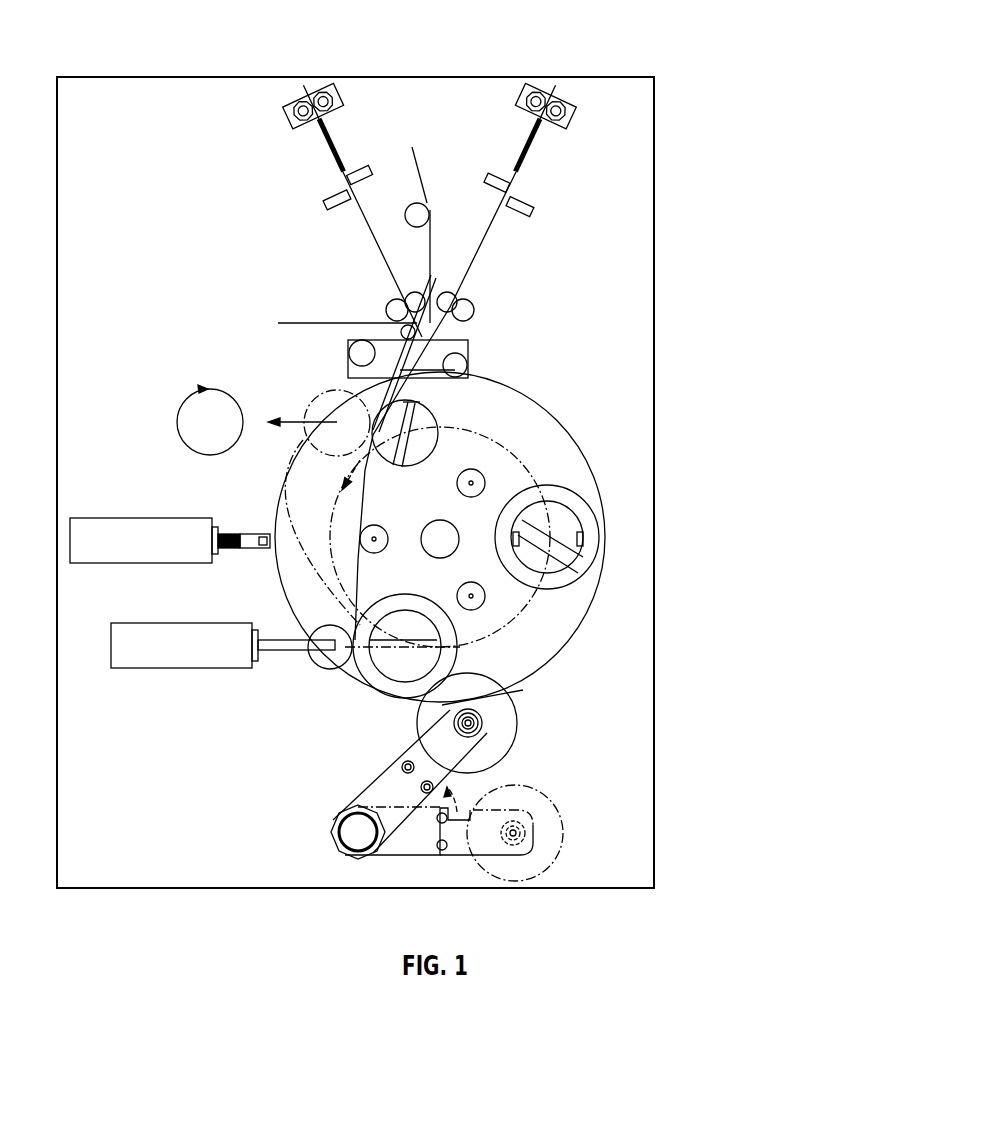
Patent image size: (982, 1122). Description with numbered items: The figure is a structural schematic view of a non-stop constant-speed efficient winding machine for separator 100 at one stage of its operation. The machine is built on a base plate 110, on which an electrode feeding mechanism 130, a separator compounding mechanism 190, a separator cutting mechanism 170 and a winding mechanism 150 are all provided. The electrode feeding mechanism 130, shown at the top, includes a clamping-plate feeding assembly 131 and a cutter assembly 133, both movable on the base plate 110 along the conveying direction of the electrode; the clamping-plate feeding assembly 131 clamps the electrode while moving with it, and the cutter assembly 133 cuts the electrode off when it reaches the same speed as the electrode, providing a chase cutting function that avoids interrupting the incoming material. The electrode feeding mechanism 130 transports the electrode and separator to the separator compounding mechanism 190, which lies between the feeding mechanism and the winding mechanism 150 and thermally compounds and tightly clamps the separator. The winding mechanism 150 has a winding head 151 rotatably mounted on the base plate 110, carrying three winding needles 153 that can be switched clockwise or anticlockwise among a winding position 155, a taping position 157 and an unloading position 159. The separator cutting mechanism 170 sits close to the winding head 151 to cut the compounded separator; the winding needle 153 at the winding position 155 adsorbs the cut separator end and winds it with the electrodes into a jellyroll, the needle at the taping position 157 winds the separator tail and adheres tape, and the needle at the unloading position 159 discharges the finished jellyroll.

The non-stop constant-speed efficient winding machine for separator 100 is at (410, 63).
The base plate 110 is at (654, 632).
The electrode feeding mechanism 130 is at (545, 134).
The clamping-plate feeding assembly 131 is at (575, 107).
The cutter assembly 133 is at (533, 200).
The winding mechanism 150 is at (615, 545).
The winding head 151 is at (283, 603).
The winding needle 153 is at (403, 640).
The winding position 155 is at (453, 415).
The taping position 157 is at (458, 683).
The unloading position 159 is at (577, 480).
The separator cutting mechanism 170 is at (305, 408).
The separator compounding mechanism 190 is at (470, 345).